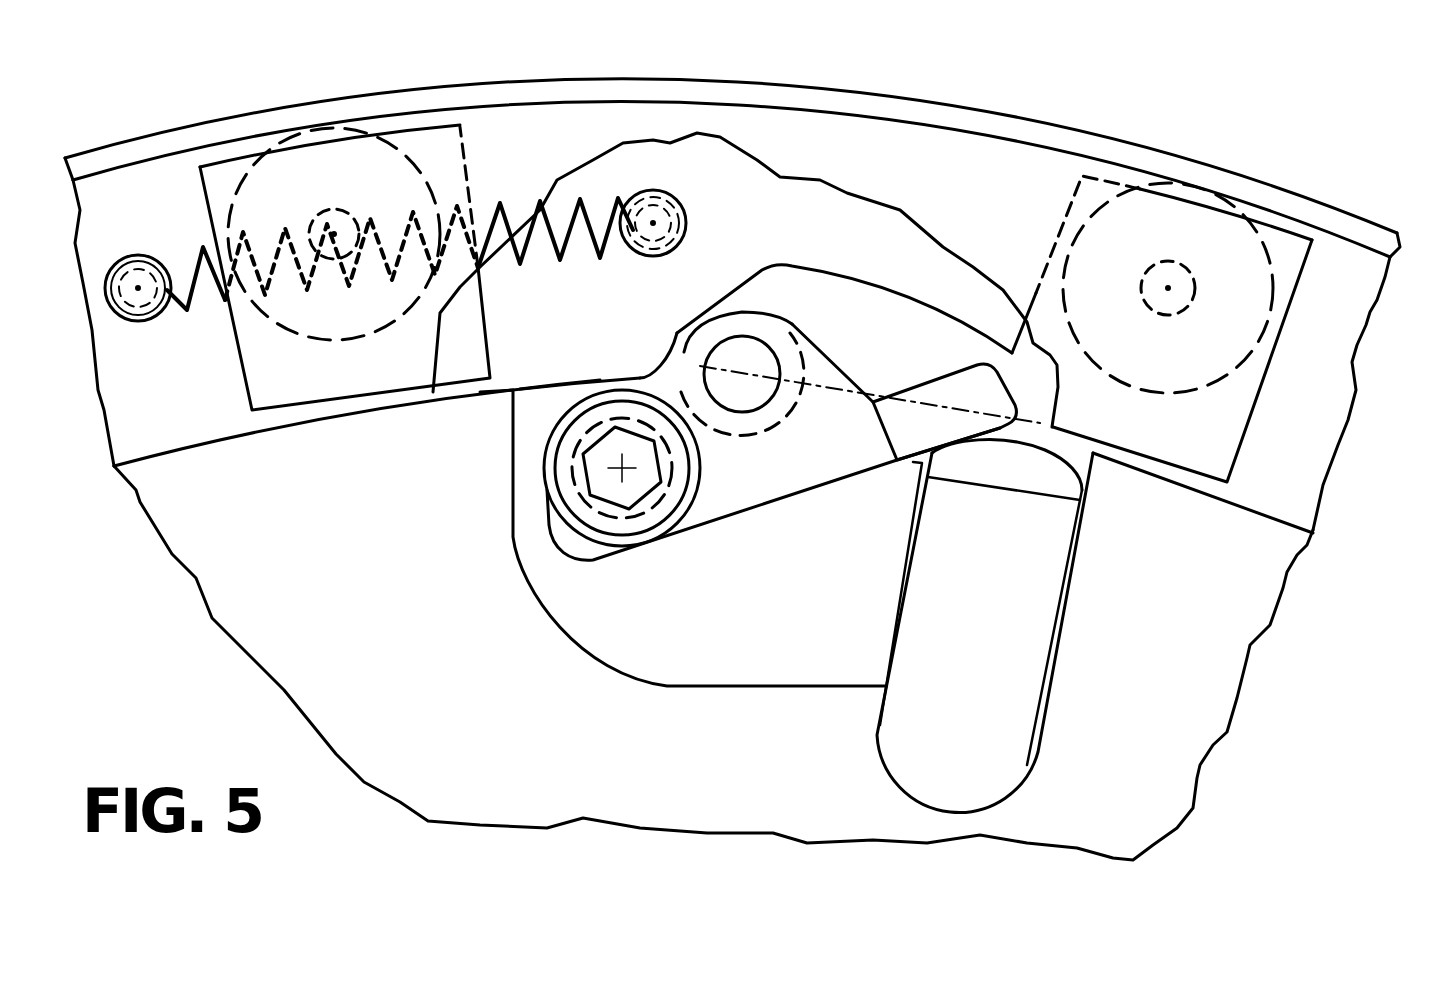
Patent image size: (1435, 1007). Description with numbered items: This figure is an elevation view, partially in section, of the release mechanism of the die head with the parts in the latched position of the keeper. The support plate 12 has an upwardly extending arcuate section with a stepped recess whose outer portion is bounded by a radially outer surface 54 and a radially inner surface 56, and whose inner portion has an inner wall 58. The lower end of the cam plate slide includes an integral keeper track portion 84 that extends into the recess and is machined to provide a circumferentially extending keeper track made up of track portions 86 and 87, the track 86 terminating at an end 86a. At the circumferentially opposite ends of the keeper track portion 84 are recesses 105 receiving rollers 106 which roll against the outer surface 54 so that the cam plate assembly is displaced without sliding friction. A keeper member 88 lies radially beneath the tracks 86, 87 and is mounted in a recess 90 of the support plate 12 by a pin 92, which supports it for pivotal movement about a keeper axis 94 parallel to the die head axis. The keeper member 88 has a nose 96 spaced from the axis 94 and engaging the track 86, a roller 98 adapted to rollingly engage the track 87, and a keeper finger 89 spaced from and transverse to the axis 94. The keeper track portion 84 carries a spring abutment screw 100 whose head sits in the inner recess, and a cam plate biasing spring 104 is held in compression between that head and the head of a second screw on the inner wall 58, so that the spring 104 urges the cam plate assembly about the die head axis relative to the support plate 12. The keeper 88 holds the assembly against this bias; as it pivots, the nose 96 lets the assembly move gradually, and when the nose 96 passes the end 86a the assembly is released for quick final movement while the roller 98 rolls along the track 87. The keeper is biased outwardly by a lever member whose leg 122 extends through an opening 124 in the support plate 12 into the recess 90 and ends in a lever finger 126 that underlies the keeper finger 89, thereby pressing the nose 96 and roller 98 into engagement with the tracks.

The support plate 12 is at (1247, 612).
The radially outer surface 54 is at (1348, 302).
The radially inner surface 56 is at (1287, 513).
The inner wall 58 is at (1325, 368).
The keeper track portion 84 is at (862, 212).
The keeper track 86 is at (770, 270).
The end of keeper track 86a is at (653, 363).
The keeper track 87 is at (552, 386).
The keeper member 88 is at (737, 497).
The keeper finger 89 is at (938, 387).
The recess 90 is at (687, 648).
The pin 92 is at (643, 507).
The keeper axis 94 is at (620, 473).
The nose 96 is at (678, 372).
The roller 98 is at (713, 320).
The spring abutment screw 100 is at (139, 322).
The cam plate biasing spring 104 is at (200, 252).
The recesses 105 is at (458, 366).
The rollers 106 is at (363, 160).
The leg 122 is at (940, 602).
The opening 124 is at (903, 645).
The lever finger 126 is at (1047, 482).